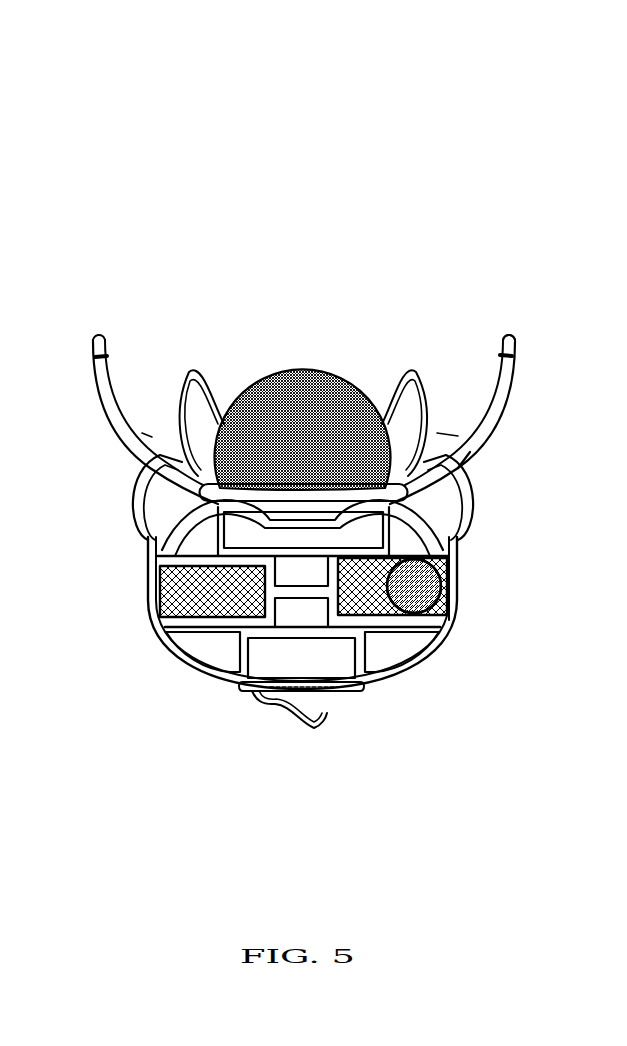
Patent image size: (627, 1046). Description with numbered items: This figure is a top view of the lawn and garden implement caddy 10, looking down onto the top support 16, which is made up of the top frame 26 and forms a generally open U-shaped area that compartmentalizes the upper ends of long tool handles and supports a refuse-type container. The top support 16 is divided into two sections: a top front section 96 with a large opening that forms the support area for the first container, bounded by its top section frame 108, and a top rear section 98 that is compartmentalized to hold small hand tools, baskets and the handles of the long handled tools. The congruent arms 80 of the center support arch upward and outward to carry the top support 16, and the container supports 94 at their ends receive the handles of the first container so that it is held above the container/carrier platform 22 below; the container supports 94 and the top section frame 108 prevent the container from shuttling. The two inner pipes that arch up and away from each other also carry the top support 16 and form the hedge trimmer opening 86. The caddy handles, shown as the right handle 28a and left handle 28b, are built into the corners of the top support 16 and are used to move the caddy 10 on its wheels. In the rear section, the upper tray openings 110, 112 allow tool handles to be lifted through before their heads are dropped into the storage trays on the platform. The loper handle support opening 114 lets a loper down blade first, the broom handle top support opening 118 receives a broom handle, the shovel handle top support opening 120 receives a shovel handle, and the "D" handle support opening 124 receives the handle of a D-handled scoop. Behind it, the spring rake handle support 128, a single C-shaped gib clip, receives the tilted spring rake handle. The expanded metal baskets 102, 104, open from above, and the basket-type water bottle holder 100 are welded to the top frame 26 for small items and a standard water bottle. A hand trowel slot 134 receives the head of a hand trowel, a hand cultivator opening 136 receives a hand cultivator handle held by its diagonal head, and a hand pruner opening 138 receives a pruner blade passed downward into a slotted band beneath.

The lawn and garden implement caddy 10 is at (387, 300).
The top support 16 is at (422, 673).
The container/carrier platform 22 is at (332, 380).
The top frame 26 is at (462, 625).
The right handle 28a is at (172, 643).
The left handle 28b is at (435, 645).
The congruent arms 80 is at (487, 370).
The hedge trimmer opening 86 is at (303, 506).
The container supports 94 is at (508, 330).
The top front section 96 is at (496, 446).
The top rear section 98 is at (487, 609).
The water bottle holder 100 is at (367, 598).
The basket 102 is at (190, 597).
The basket 104 is at (407, 570).
The top section frame 108 is at (493, 390).
The upper tray opening 110 is at (157, 500).
The upper tray opening 112 is at (450, 500).
The loper handle support opening 114 is at (253, 537).
The broom handle top support opening 118 is at (300, 574).
The shovel handle top support opening 120 is at (290, 612).
The "D" handle support opening 124 is at (322, 660).
The spring rake handle support 128 is at (307, 733).
The hand trowel slot 134 is at (153, 533).
The hand cultivator opening 136 is at (197, 555).
The hand pruner opening 138 is at (440, 532).